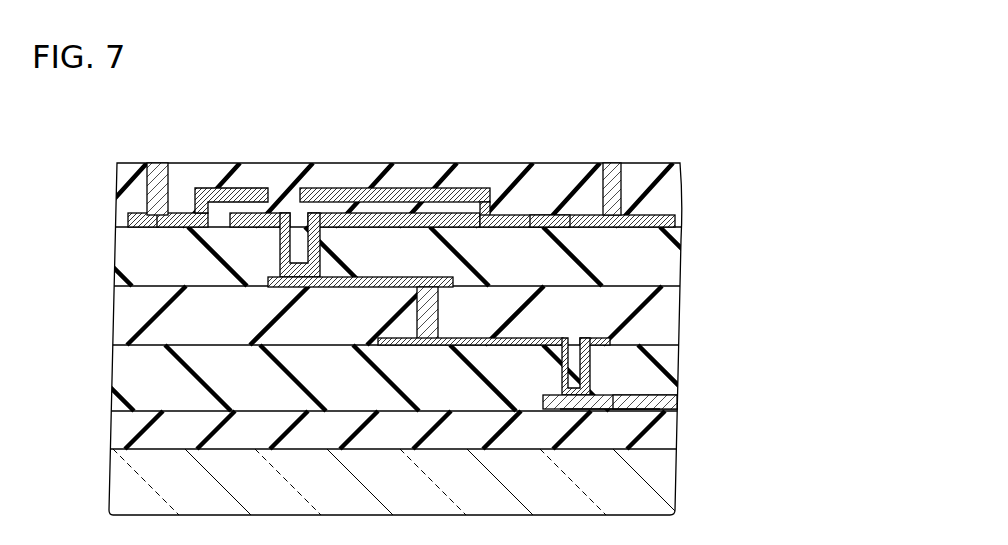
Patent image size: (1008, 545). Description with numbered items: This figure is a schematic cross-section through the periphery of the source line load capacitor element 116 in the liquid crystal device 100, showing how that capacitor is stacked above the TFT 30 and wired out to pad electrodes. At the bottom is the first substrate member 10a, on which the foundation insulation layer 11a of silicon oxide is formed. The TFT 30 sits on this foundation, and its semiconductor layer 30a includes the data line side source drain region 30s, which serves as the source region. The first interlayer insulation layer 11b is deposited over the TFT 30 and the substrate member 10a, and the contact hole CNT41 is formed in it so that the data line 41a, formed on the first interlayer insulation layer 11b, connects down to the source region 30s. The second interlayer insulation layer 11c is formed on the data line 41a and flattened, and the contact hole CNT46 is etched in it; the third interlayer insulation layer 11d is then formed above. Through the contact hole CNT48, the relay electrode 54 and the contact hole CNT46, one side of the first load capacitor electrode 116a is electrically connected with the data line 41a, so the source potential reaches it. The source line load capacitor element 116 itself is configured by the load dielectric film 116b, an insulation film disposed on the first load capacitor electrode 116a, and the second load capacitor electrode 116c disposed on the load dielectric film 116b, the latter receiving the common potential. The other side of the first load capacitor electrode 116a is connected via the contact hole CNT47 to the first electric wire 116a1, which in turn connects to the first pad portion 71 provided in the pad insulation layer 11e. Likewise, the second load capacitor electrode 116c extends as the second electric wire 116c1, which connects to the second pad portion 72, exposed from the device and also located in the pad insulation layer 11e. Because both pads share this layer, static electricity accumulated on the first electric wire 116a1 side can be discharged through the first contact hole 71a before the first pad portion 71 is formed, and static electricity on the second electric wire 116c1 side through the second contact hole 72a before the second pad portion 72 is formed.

The liquid crystal device 100 is at (689, 101).
The first substrate member 10a is at (432, 482).
The foundation insulation layer 11a is at (424, 430).
The first interlayer insulation layer 11b is at (352, 378).
The second interlayer insulation layer 11c is at (444, 315).
The third interlayer insulation layer 11d is at (359, 256).
The pad insulation layer 11e is at (353, 195).
The TFT 30 is at (642, 419).
The semiconductor layer 30a is at (650, 390).
The data line side source drain region 30s is at (567, 413).
The data line 41a is at (510, 337).
The relay electrode 54 is at (380, 276).
The first pad portion 71 is at (181, 162).
The contact hole CNT71a (first contact hole) 71a is at (158, 190).
The second pad portion 72 is at (609, 162).
The contact hole CNT72a (second contact hole) 72a is at (612, 186).
The source line load capacitor element 116 is at (381, 148).
The first load capacitor electrode 116a is at (288, 165).
The first electric wire 116a1 is at (133, 212).
The load dielectric film 116b is at (408, 205).
The second load capacitor electrode 116c is at (558, 165).
The second electric wire 116c1 is at (540, 166).
The contact hole CNT41 is at (566, 365).
The contact hole CNT46 is at (418, 318).
The contact hole CNT47 is at (252, 206).
The contact hole CNT48 is at (287, 248).